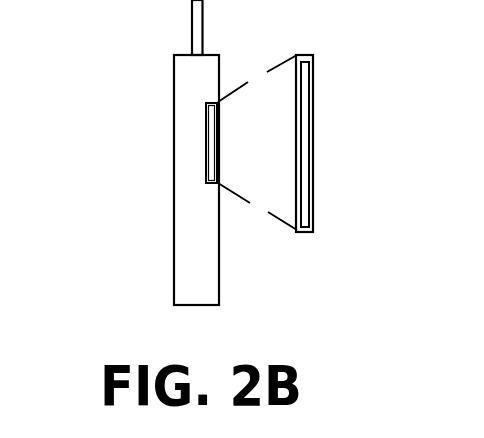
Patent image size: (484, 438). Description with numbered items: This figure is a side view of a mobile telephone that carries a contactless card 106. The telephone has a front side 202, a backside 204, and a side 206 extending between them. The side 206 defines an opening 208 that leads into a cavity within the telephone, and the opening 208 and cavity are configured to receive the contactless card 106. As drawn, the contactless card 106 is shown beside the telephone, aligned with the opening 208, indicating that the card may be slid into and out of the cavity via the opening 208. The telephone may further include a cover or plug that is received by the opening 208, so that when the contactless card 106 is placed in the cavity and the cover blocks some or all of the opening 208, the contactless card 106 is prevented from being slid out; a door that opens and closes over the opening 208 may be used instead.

The front side 202 is at (175, 128).
The side 206 is at (200, 67).
The opening 208 is at (204, 136).
The contactless card 106 is at (305, 88).
The backside 204 is at (218, 300).